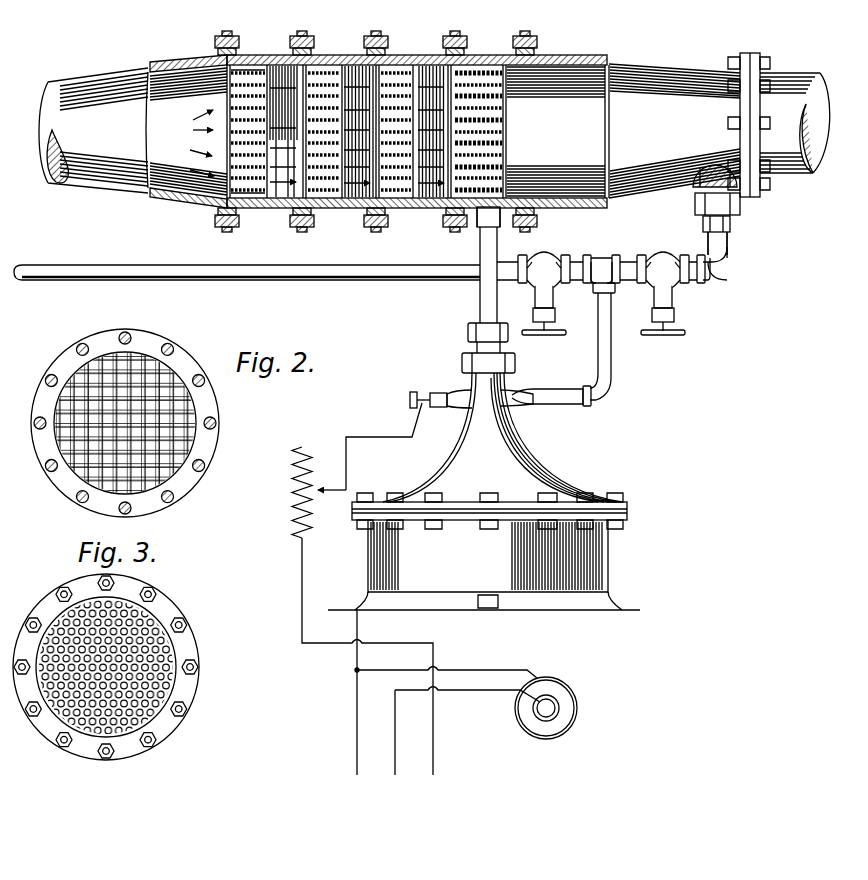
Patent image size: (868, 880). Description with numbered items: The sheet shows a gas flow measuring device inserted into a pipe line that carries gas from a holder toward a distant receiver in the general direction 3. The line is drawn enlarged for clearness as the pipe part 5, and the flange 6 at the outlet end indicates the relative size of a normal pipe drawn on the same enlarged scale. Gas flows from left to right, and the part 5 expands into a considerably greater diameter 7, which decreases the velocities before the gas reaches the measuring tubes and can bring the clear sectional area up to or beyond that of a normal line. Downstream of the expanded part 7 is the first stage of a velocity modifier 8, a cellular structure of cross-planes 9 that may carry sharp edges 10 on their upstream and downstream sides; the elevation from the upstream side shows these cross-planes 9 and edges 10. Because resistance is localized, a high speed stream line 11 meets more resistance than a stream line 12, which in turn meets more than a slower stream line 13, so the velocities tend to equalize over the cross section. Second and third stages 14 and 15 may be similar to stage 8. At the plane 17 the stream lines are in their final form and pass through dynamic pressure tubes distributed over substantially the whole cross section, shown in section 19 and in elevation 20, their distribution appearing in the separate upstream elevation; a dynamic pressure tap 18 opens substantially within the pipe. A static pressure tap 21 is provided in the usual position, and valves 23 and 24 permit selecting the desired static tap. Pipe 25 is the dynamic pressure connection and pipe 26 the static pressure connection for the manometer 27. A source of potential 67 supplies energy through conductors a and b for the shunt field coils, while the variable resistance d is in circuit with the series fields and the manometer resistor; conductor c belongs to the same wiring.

In FIG. 1, the direction of gas flow to distant receiver 3 is at (804, 123).
In FIG. 1, the enlarged pipe line part 5 is at (56, 182).
In FIG. 1, the flange and relative pipe size 6 is at (791, 167).
In FIG. 1, the expanded pipe part 7 is at (220, 207).
In FIG. 1, the velocity modifier first stage 8 is at (248, 207).
In FIG. 1, the cross-planes 9 is at (262, 192).
In FIG. 2, the cross-planes 9 is at (176, 358).
In FIG. 1, the sharp edges 10 is at (216, 79).
In FIG. 2, the sharp edges 10 is at (182, 467).
In FIG. 1, the high speed stream line 11 is at (185, 127).
In FIG. 1, the intermediate stream line 12 is at (185, 151).
In FIG. 1, the low velocity stream line 13 is at (189, 171).
In FIG. 1, the second stage velocity modifier 14 is at (333, 207).
In FIG. 1, the third stage velocity modifier 15 is at (408, 207).
In FIG. 1, the measuring plane 17 is at (448, 213).
In FIG. 1, the dynamic pressure tap 18 is at (533, 219).
In FIG. 1, the dynamic pressure tubes in section 19 is at (500, 183).
In FIG. 1, the dynamic pressure tubes in elevation 20 is at (500, 139).
In FIG. 1, the static pressure tap 21 is at (700, 192).
In FIG. 1, the valve 23 is at (554, 252).
In FIG. 1, the valve 24 is at (673, 244).
In FIG. 1, the dynamic pressure connection pipe 25 is at (480, 303).
In FIG. 1, the static pressure connection pipe 26 is at (565, 375).
In FIG. 1, the manometer 27 is at (556, 478).
In FIG. 1, the source of potential 67 is at (566, 684).
In FIG. 1, the conductor a is at (441, 705).
In FIG. 1, the conductor b is at (463, 744).
In FIG. 1, the conductor c is at (432, 786).
In FIG. 1, the variable resistance d is at (349, 589).